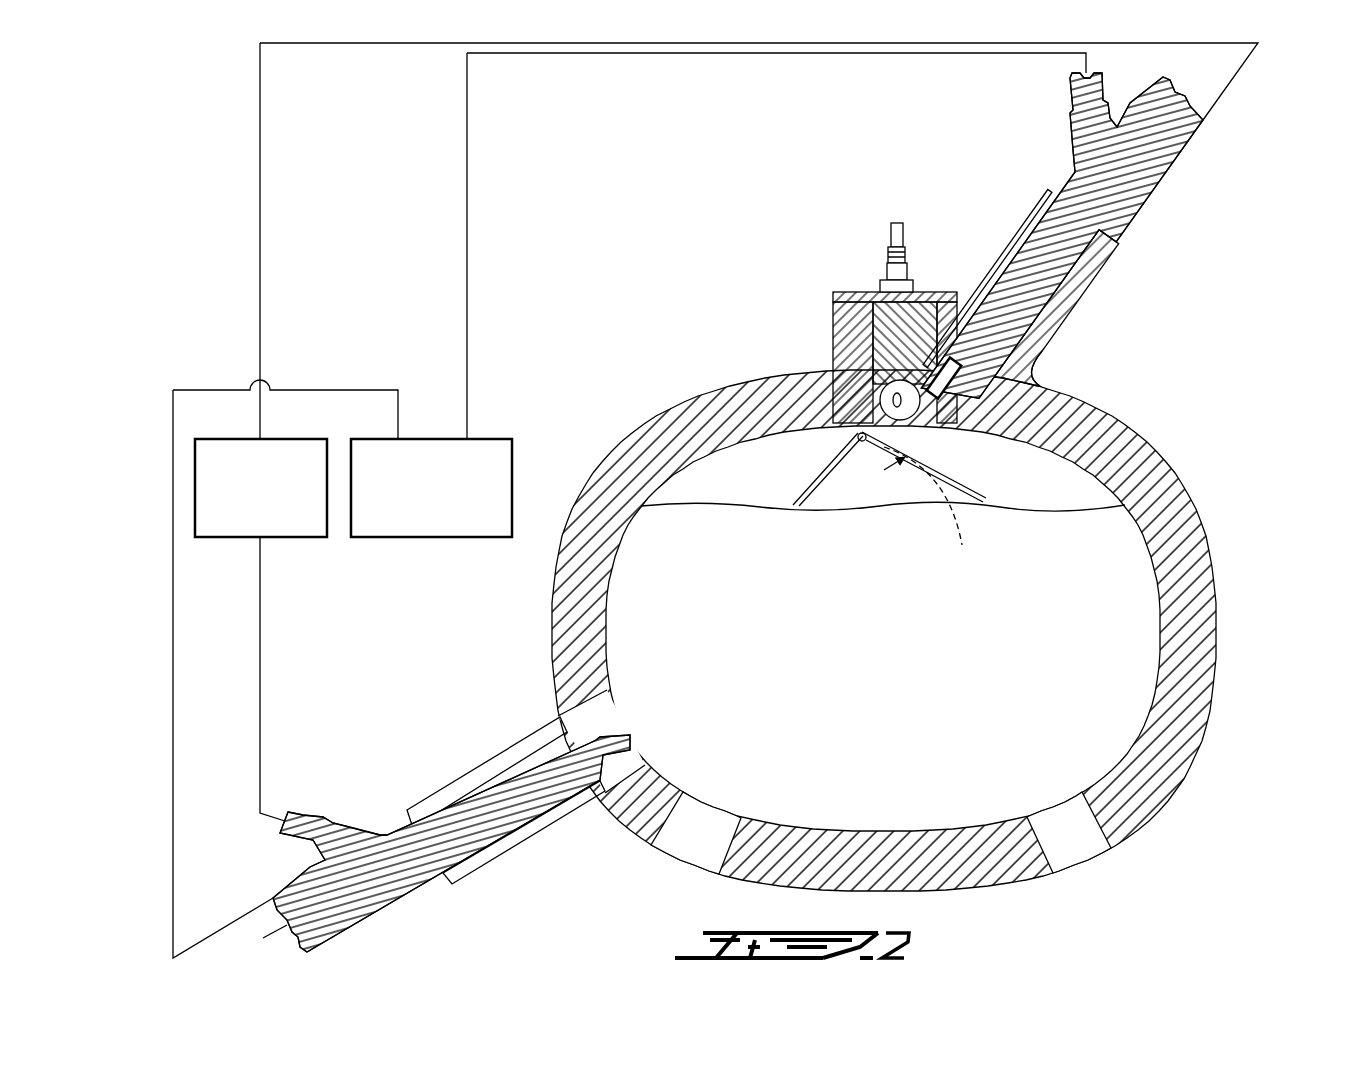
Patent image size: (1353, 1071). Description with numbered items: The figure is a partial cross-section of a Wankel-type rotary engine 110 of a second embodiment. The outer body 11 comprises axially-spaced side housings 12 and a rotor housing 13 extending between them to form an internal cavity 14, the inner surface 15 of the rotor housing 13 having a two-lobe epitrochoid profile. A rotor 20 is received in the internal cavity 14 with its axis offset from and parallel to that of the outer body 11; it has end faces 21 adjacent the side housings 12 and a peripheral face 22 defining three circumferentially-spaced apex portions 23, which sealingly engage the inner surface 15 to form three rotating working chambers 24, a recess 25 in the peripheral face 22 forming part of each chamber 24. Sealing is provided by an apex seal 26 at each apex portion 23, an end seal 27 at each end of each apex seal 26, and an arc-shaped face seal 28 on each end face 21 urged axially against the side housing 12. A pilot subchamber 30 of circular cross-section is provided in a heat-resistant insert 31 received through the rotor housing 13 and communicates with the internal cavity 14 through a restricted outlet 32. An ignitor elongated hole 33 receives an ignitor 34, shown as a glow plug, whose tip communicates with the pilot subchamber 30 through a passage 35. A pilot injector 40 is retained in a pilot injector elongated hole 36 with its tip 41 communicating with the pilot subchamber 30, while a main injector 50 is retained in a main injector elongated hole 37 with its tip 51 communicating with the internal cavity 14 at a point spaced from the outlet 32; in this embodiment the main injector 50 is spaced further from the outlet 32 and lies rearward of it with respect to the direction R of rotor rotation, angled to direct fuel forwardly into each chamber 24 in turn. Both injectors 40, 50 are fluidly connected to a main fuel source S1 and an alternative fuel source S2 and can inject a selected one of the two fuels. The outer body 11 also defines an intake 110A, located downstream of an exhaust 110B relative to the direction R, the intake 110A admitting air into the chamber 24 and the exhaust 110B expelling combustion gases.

The outer body 11 is at (1095, 400).
The side housings 12 is at (1050, 470).
The rotor housing 13 is at (1126, 480).
The internal cavity 14 is at (1028, 488).
The inner surface 15 is at (1034, 390).
The rotor 20 is at (883, 492).
The end faces 21 is at (908, 486).
The peripheral face 22 is at (828, 478).
The apex portions 23 is at (858, 420).
The working chambers 24 is at (815, 428).
The recess 25 is at (952, 495).
The apex seal 26 is at (846, 398).
The end seal 27 is at (862, 478).
The face seal 28 is at (866, 446).
The pilot subchamber 30 is at (945, 320).
The insert 31 is at (905, 330).
The outlet 32 is at (908, 428).
The ignitor elongated hole 33 is at (866, 292).
The ignitor 34 is at (893, 221).
The passage 35 is at (893, 397).
The pilot injector elongated hole 36 is at (1078, 254).
The main injector elongated hole 37 is at (489, 793).
The pilot injector 40 is at (1192, 151).
The tip 41 is at (1022, 352).
The main injector 50 is at (380, 912).
The tip 51 is at (848, 426).
The rotary engine 110 is at (1252, 303).
The intake 110A is at (713, 848).
The exhaust 110B is at (1043, 847).
The direction of rotor rotation R is at (887, 468).
The main fuel source S1 is at (300, 540).
The alternative fuel source S2 is at (430, 540).